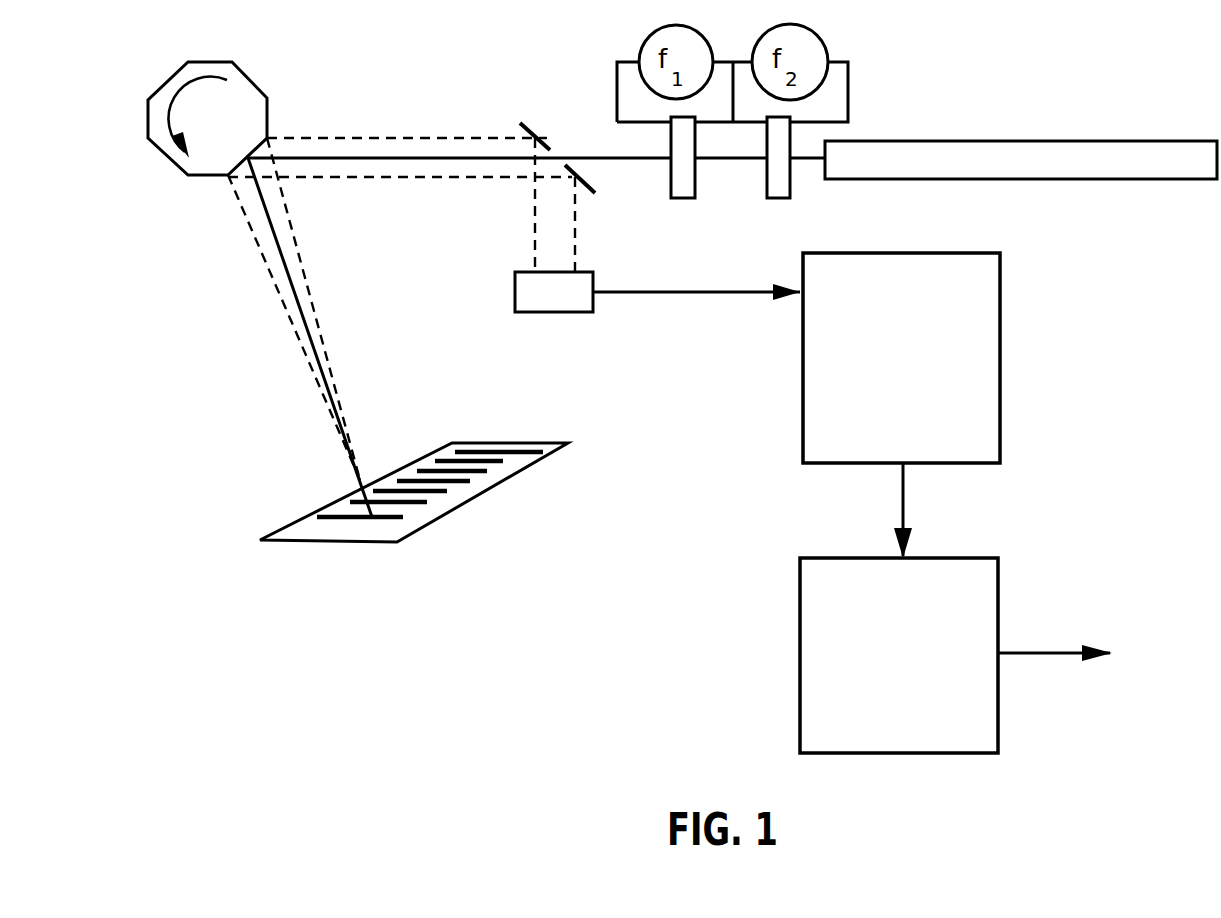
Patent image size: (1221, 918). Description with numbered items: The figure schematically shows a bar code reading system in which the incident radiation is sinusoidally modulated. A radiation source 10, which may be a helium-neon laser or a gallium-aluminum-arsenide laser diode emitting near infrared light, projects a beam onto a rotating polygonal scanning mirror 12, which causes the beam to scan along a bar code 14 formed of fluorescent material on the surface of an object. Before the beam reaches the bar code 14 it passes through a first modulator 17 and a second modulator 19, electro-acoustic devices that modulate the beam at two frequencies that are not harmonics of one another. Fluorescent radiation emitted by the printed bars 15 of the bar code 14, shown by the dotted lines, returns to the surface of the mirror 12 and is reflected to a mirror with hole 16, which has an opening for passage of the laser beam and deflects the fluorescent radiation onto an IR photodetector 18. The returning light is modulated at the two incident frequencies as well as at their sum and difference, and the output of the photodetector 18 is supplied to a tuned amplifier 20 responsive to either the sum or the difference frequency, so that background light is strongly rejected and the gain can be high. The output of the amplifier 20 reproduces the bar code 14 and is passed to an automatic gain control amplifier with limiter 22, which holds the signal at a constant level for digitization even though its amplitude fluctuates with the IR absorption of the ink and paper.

The radiation source 10 is at (938, 141).
The rotating polygonal scanning mirror 12 is at (238, 93).
The bar code 14 is at (472, 502).
The printed bars 15 is at (470, 481).
The mirror with hole 16 is at (533, 134).
The first modulator 17 is at (690, 184).
The IR photodetector 18 is at (555, 306).
The second modulator 19 is at (785, 189).
The tuned amplifier 20 is at (818, 400).
The automatic gain control amplifier with limiter 22 is at (820, 643).